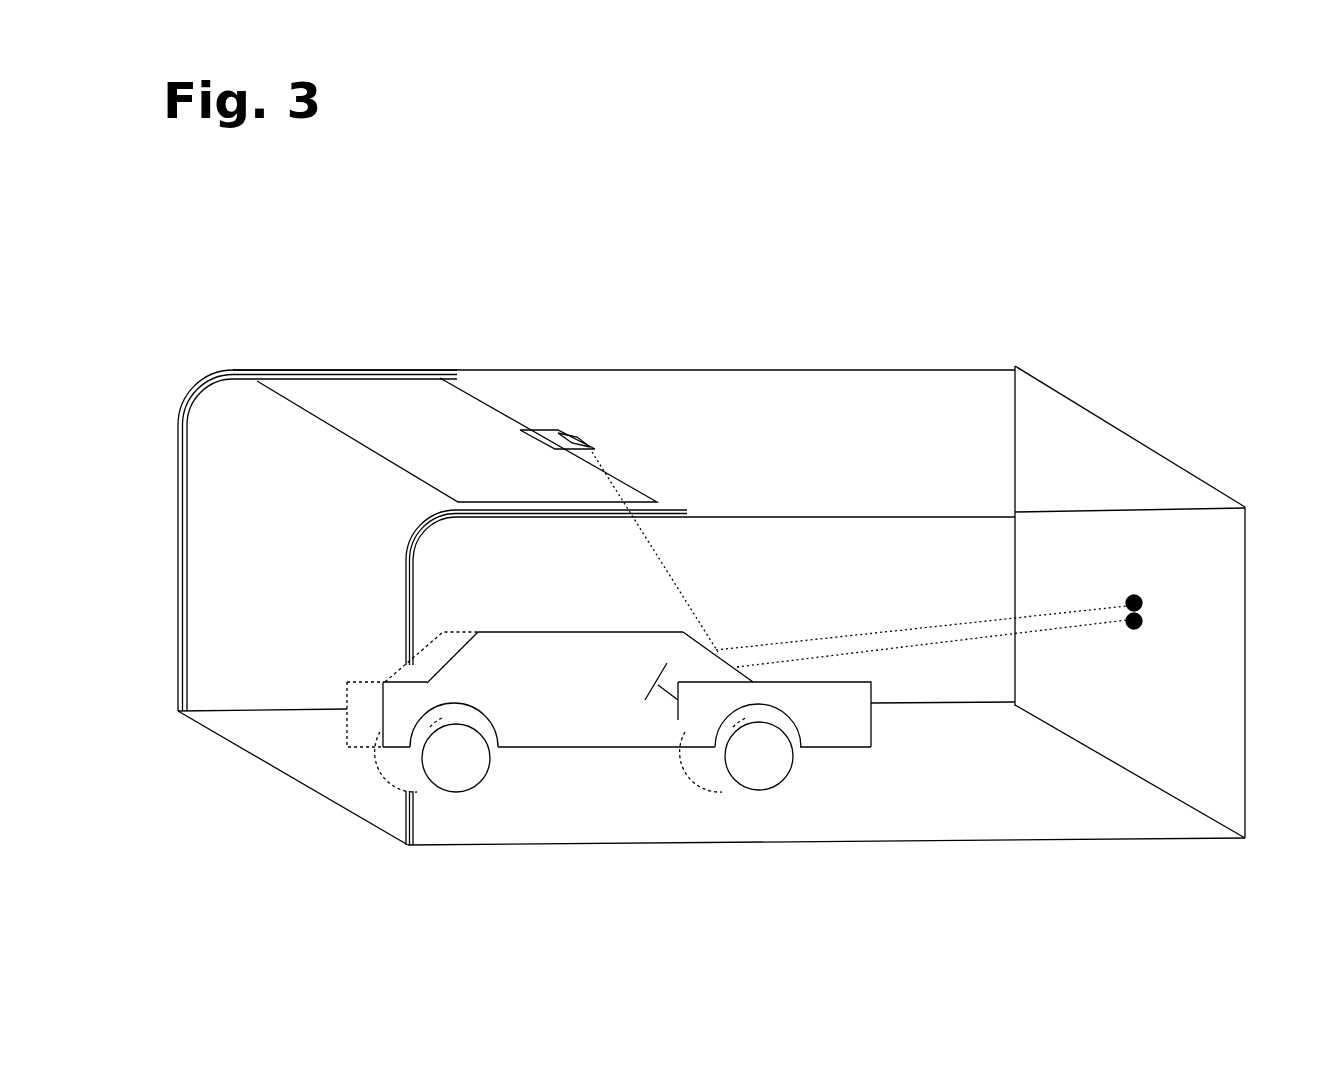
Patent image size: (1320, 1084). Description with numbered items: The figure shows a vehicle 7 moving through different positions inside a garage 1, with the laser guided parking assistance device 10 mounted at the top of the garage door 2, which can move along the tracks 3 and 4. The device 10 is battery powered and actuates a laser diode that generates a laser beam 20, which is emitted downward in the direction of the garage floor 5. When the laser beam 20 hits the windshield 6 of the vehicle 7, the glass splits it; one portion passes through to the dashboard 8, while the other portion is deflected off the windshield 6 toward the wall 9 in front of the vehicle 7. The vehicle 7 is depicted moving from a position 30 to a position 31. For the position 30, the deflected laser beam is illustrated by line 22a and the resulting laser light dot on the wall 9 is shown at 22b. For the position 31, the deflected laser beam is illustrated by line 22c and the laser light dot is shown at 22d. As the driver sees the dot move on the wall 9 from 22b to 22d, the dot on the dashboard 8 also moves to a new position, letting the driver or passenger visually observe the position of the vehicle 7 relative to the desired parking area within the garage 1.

The garage 1 is at (623, 368).
The garage door 2 is at (342, 437).
The track 3 is at (260, 372).
The track 4 is at (463, 520).
The garage floor 5 is at (1040, 838).
The windshield 6 is at (698, 640).
The vehicle 7 is at (598, 632).
The dashboard 8 is at (686, 748).
The wall 9 is at (1247, 612).
The laser guided parking assistance device 10 is at (575, 430).
The laser beam 20 is at (678, 585).
The deflected laser beam 22a is at (868, 634).
The laser light dot 22b is at (1136, 596).
The deflected laser beam 22c is at (945, 640).
The laser light dot 22d is at (1135, 628).
The position 30 is at (445, 632).
The position 31 is at (540, 632).